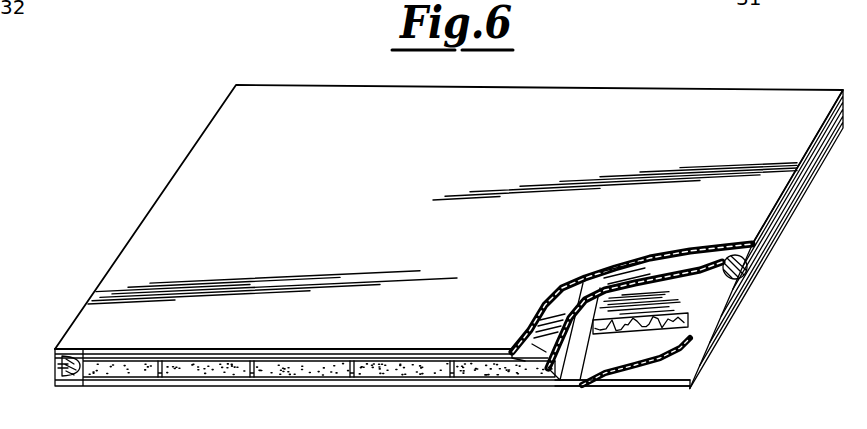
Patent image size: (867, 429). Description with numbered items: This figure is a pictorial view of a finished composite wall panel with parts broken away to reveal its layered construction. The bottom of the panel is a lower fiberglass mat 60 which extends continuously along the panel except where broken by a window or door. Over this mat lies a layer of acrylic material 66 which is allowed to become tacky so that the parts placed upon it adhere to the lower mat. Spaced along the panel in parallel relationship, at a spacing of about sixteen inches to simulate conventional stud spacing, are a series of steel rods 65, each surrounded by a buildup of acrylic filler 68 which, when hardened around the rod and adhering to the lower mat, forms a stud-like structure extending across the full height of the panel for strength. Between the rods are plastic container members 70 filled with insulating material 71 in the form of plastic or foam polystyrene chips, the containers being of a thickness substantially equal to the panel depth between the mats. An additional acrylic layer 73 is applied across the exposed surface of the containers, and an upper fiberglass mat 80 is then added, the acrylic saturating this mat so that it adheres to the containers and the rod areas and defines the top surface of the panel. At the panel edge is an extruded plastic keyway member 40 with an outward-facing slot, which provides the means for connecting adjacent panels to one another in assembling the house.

The upper fiberglass mat 80 is at (665, 110).
The acrylic filler 68 is at (448, 383).
The steel rods 65 is at (457, 380).
The acrylic layer 73 is at (525, 362).
The plastic container members 70 is at (658, 302).
The insulating material 71 is at (660, 333).
The acrylic material layer 66 is at (628, 366).
The lower fiberglass mat 60 is at (690, 389).
The keyway member 40 is at (744, 269).